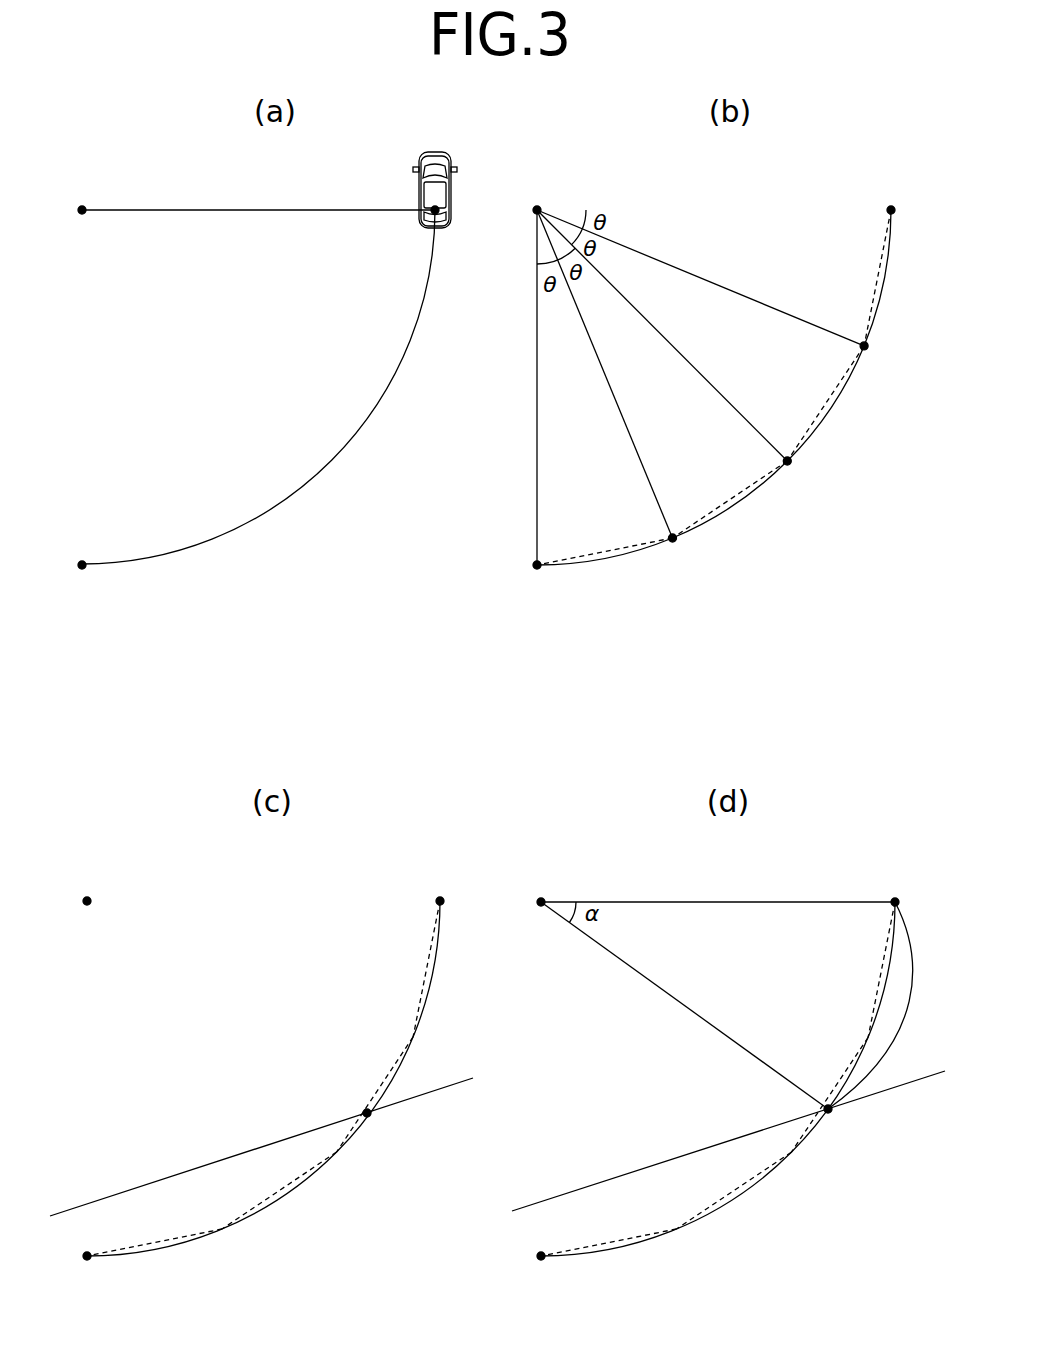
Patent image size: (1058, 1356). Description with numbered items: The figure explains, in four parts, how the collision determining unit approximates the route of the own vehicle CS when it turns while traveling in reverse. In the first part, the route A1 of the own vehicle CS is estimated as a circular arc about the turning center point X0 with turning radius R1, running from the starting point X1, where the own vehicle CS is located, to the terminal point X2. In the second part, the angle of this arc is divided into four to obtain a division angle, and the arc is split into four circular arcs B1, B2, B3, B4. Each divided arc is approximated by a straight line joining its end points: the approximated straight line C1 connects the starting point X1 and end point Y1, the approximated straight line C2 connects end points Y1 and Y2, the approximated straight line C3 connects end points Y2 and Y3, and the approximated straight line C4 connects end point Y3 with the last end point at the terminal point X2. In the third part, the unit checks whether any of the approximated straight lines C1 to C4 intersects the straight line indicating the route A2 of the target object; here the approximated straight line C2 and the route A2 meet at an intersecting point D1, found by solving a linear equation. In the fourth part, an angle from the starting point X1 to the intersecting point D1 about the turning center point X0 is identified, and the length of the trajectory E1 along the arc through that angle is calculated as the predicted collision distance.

The turning center point X0 is at (80, 206).
The starting point X1 is at (440, 210).
The terminal point X2 is at (82, 571).
The turning radius R1 is at (264, 208).
The own vehicle CS is at (422, 166).
The route of the own vehicle A1 is at (352, 440).
The end point Y1 is at (867, 347).
The end point Y2 is at (789, 463).
The end point Y3 is at (674, 542).
The circular arc B1 is at (884, 279).
The circular arc B2 is at (836, 408).
The circular arc B3 is at (742, 512).
The circular arc B4 is at (600, 562).
The approximated straight line C1 is at (876, 277).
The approximated straight line C2 is at (824, 402).
The approximated straight line C3 is at (729, 500).
The approximated straight line C4 is at (605, 552).
The intersecting point D1 is at (365, 1110).
The route of the target object A2 is at (448, 1086).
The trajectory E1 is at (875, 1005).